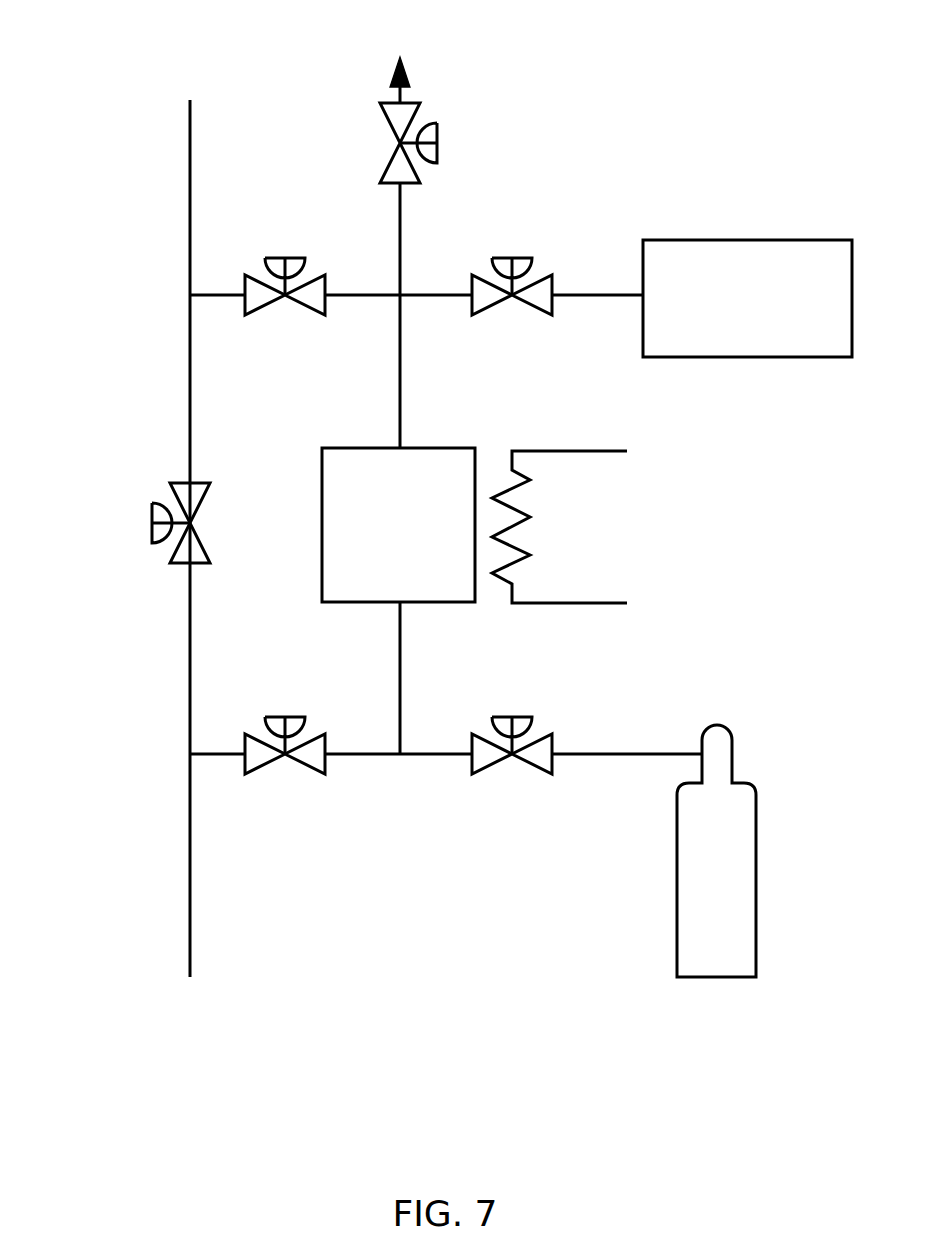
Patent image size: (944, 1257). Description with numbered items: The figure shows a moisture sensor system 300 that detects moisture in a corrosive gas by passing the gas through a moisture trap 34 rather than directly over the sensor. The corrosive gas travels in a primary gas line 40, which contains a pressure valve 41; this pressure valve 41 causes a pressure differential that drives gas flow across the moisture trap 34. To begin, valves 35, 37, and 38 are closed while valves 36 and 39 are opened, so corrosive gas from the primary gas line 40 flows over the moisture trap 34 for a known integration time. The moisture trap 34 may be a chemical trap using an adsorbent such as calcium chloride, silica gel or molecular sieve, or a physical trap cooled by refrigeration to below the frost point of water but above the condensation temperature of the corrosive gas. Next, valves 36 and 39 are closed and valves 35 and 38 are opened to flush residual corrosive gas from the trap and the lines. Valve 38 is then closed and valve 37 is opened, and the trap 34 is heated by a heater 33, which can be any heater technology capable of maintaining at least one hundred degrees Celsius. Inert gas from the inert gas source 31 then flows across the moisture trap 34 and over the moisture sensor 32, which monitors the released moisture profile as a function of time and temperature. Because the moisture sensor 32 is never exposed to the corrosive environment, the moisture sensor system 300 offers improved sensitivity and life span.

The inert gas source 31 is at (757, 818).
The moisture sensor 32 is at (747, 298).
The heater 33 is at (518, 490).
The moisture trap 34 is at (398, 525).
The valve 35 is at (512, 696).
The valve 36 is at (285, 696).
The valve 37 is at (512, 237).
The valve 38 is at (338, 140).
The valve 39 is at (285, 237).
The primary gas line 40 is at (186, 827).
The pressure valve 41 is at (130, 527).
The moisture sensor system 300 is at (408, 1008).